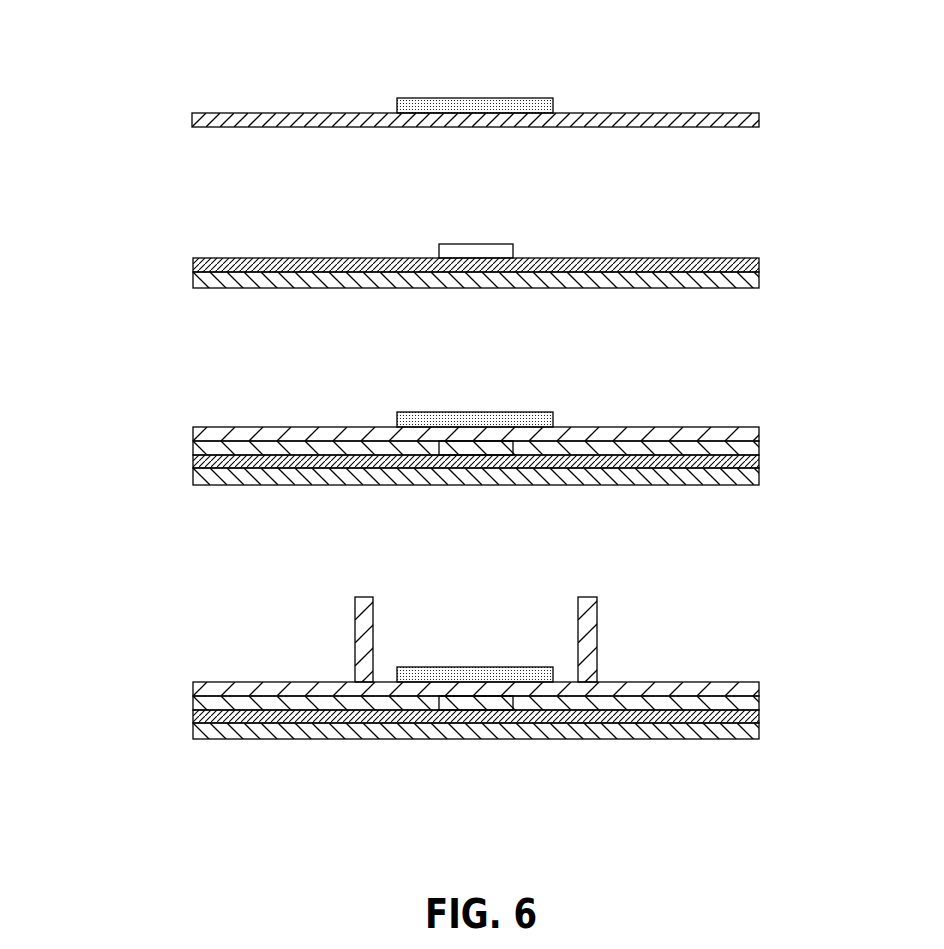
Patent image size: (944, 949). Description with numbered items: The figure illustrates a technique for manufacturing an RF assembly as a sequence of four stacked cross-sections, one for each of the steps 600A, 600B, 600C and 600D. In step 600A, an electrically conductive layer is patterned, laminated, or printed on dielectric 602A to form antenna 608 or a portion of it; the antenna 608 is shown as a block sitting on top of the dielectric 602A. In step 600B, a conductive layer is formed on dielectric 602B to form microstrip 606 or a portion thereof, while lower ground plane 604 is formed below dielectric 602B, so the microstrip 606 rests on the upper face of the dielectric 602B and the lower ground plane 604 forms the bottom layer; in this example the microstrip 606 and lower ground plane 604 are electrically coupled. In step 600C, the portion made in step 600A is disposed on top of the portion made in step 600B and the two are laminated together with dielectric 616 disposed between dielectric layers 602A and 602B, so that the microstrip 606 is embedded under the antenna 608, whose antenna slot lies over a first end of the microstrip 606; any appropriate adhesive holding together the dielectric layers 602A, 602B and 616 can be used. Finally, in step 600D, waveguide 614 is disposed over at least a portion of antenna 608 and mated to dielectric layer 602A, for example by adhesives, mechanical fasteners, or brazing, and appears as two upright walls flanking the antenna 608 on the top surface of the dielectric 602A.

The step 600A is at (150, 116).
The step 600B is at (150, 268).
The step 600C is at (150, 447).
The step 600D is at (150, 710).
The dielectric 602A is at (760, 116).
The dielectric 602B is at (760, 263).
The lower ground plane 604 is at (760, 281).
The microstrip 606 is at (497, 244).
The antenna 608 is at (512, 98).
The waveguide 614 is at (592, 627).
The dielectric 616 is at (760, 447).